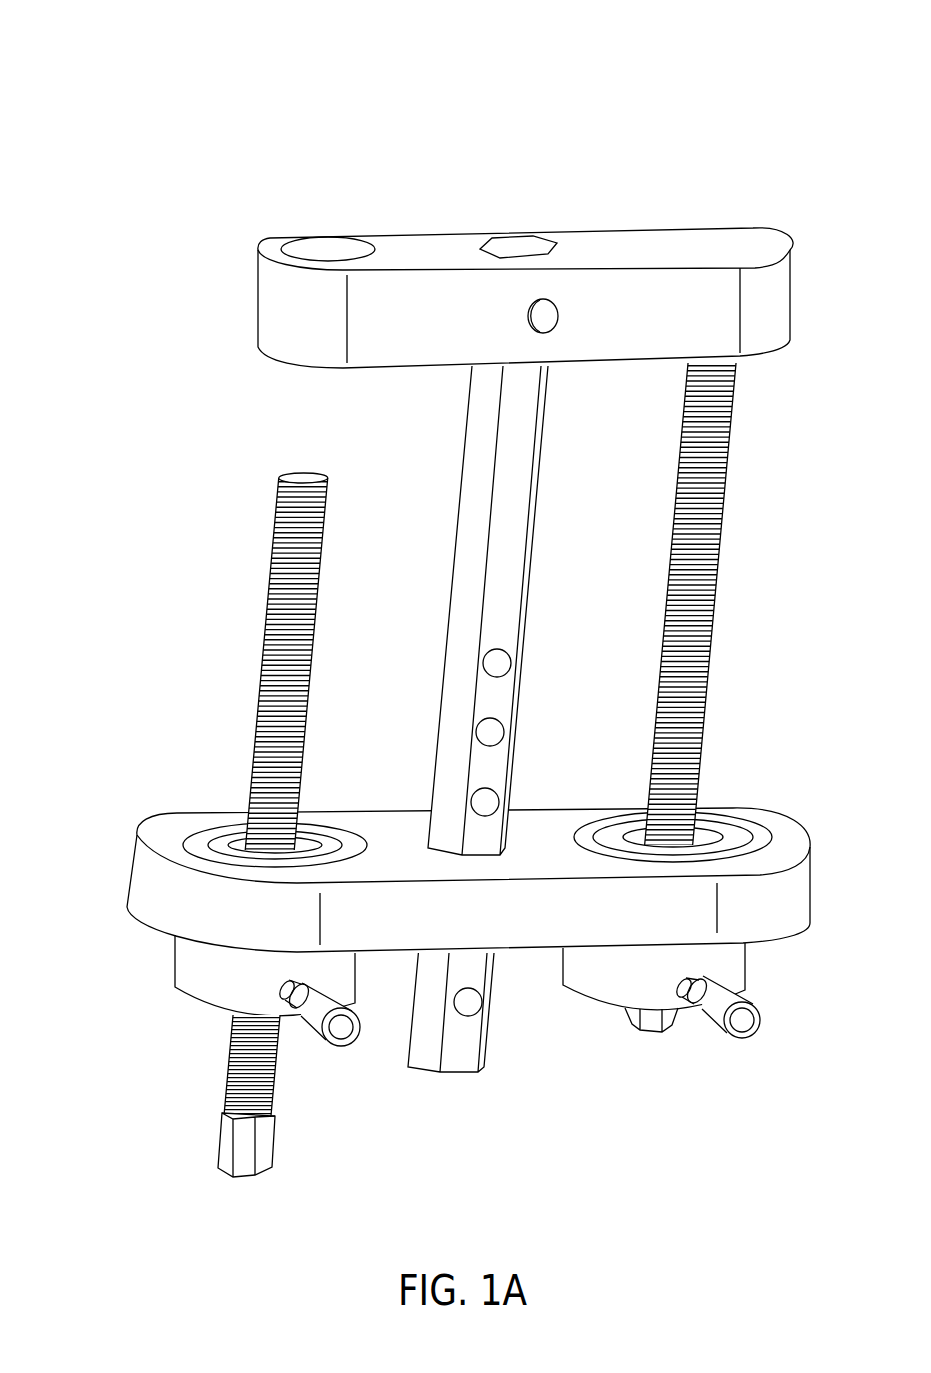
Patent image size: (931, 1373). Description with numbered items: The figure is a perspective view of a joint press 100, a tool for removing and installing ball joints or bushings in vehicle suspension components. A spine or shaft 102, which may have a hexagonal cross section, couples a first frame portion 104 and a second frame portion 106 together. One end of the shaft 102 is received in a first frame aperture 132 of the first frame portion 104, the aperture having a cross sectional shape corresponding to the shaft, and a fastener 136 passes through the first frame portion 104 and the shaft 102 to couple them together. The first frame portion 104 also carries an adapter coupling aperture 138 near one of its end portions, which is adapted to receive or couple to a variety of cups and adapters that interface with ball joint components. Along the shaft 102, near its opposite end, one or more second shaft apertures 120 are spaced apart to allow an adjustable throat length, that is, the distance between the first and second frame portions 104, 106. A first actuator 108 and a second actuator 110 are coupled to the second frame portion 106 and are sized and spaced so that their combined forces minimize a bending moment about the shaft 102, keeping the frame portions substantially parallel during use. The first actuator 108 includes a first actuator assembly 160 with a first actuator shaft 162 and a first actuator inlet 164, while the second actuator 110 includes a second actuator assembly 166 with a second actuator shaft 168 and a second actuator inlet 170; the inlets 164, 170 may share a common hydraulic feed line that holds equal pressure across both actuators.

The joint press 100 is at (300, 104).
The shaft 102 is at (460, 495).
The first frame portion 104 is at (267, 300).
The second frame portion 106 is at (138, 873).
The first actuator 108 is at (193, 1007).
The second actuator 110 is at (605, 1005).
The second shaft apertures 120 is at (463, 1030).
The first frame aperture 132 is at (510, 237).
The fastener 136 is at (528, 316).
The adapter coupling aperture 138 is at (305, 245).
The first actuator assembly 160 is at (173, 987).
The first actuator shaft 162 is at (265, 635).
The first actuator inlet 164 is at (347, 1050).
The second actuator assembly 166 is at (590, 985).
The second actuator shaft 168 is at (722, 543).
The second actuator inlet 170 is at (747, 1042).